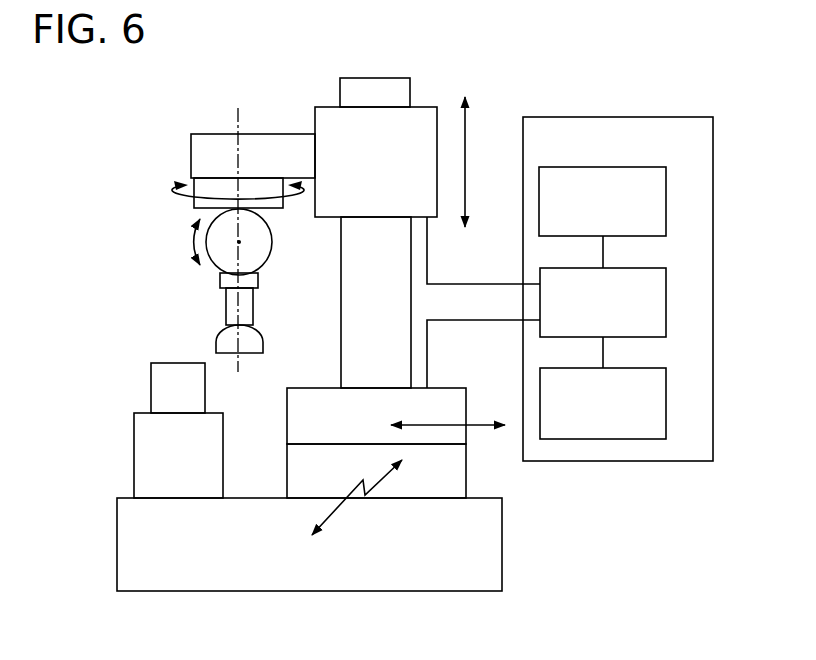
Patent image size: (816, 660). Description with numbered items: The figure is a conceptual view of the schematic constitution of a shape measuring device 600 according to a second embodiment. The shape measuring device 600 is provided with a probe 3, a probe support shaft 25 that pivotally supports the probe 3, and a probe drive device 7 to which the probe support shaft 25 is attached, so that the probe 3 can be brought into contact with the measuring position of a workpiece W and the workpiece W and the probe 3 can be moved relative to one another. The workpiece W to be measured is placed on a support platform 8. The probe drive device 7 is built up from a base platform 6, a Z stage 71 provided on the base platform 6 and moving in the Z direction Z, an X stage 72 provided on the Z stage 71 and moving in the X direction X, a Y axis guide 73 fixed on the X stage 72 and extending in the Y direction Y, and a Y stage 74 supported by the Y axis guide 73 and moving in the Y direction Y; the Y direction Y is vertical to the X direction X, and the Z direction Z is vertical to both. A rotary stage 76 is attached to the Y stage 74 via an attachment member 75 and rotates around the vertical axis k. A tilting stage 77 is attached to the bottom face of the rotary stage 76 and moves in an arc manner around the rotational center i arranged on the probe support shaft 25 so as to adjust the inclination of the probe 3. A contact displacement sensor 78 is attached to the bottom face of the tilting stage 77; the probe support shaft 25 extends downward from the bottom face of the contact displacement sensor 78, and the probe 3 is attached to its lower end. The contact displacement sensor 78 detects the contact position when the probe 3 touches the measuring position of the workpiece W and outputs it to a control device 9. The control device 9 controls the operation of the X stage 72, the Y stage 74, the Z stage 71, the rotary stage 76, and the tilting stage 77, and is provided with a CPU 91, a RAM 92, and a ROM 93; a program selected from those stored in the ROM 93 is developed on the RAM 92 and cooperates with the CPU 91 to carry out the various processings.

The shape measuring device 600 is at (342, 22).
The probe drive device 7 is at (307, 87).
The base platform 6 is at (435, 582).
The support platform 8 is at (142, 467).
The workpiece W is at (157, 392).
The Z stage 71 is at (458, 473).
The X stage 72 is at (459, 435).
The Y axis guide 73 is at (357, 372).
The Y stage 74 is at (425, 105).
The attachment member 75 is at (280, 140).
The rotary stage 76 is at (212, 187).
The tilting stage 77 is at (265, 243).
The contact displacement sensor 78 is at (250, 282).
The probe support shaft 25 is at (248, 308).
The probe 3 is at (258, 340).
The control device 9 is at (672, 115).
The CPU 91 is at (667, 303).
The RAM 92 is at (667, 405).
The ROM 93 is at (667, 203).
The vertical axis k is at (237, 123).
The rotational center i is at (239, 242).
The X direction X is at (448, 411).
The Y direction Y is at (475, 162).
The Z direction Z is at (357, 497).